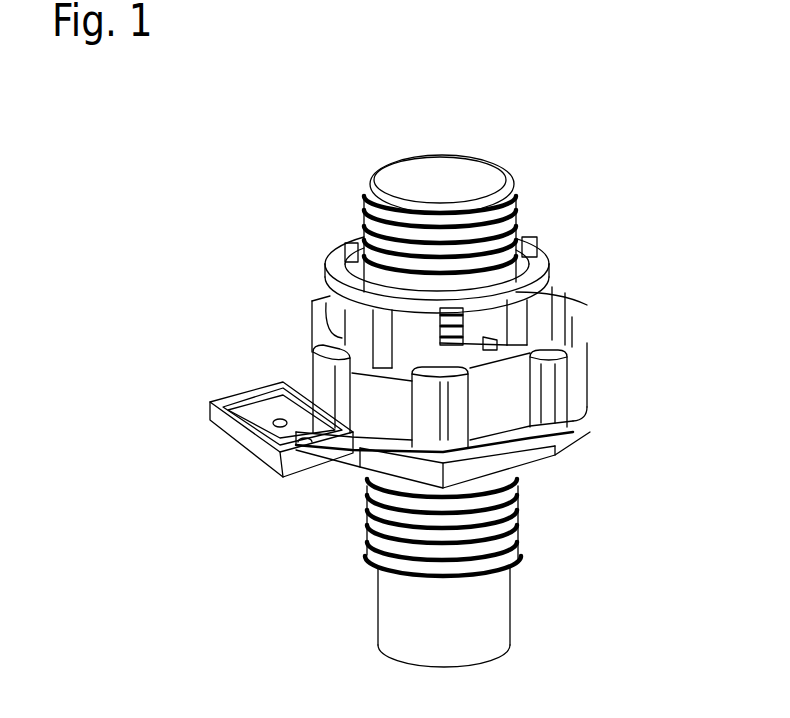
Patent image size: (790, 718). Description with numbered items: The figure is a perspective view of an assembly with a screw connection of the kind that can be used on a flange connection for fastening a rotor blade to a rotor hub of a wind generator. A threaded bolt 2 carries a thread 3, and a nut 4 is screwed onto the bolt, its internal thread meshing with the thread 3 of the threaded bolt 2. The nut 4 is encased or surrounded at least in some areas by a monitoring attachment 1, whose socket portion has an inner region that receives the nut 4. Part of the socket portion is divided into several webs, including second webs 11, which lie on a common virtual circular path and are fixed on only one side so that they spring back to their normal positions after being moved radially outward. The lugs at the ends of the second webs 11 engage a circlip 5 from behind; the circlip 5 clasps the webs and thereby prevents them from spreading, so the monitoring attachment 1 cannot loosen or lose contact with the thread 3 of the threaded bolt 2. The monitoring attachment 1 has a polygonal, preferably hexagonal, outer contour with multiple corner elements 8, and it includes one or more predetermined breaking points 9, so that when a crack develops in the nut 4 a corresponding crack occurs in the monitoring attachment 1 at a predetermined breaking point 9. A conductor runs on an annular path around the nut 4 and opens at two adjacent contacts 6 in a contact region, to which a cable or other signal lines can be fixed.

The monitoring attachment 1 is at (576, 311).
The threaded bolt 2 is at (480, 635).
The thread 3 is at (507, 518).
The nut 4 is at (556, 452).
The circlip 5 is at (549, 264).
The contacts 6 is at (263, 422).
The corner elements 8 is at (548, 398).
The predetermined breaking point 9 is at (585, 382).
The second webs 11 is at (538, 238).